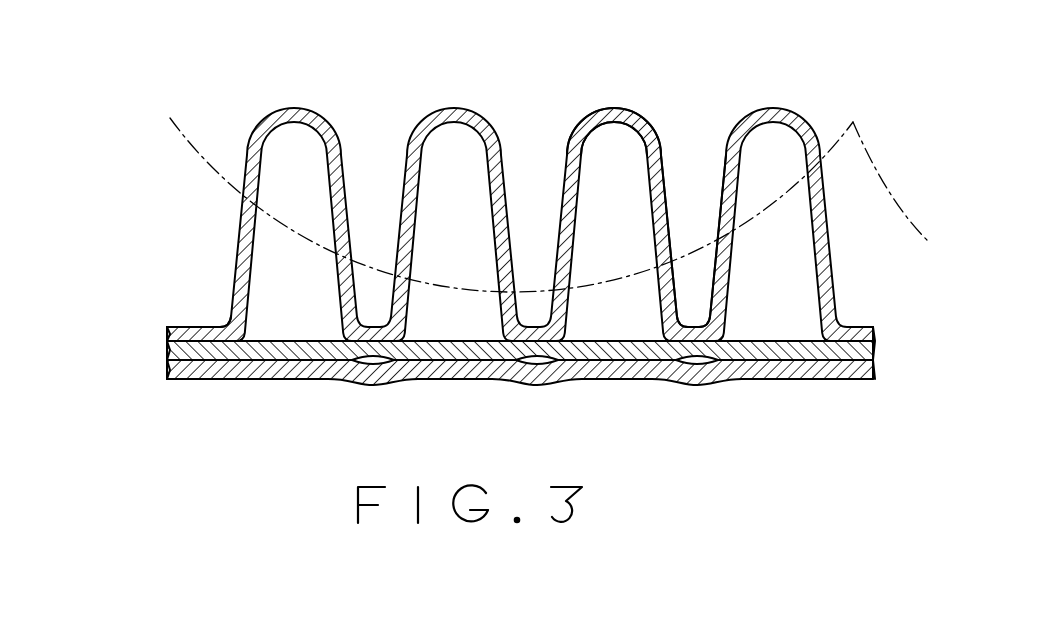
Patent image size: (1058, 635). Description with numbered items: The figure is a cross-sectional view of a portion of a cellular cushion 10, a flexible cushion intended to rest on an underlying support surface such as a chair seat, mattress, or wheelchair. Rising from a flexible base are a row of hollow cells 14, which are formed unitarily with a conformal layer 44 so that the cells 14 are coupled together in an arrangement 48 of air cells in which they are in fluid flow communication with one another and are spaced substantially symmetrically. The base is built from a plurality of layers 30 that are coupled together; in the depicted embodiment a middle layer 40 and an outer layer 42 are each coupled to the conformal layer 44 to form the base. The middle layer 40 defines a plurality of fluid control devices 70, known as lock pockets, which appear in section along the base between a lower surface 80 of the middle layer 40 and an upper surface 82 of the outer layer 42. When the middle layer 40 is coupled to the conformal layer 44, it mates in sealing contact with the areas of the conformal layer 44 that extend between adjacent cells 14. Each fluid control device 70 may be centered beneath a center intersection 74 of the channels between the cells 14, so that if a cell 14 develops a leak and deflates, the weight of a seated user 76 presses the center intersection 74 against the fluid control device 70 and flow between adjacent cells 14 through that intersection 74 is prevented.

The cellular cushion 10 is at (207, 228).
The hollow cells 14 is at (345, 139).
The layers 30 is at (883, 374).
The middle layer 40 is at (495, 358).
The outer layer 42 is at (242, 379).
The conformal layer 44 is at (193, 325).
The arrangement of air cells 48 is at (623, 95).
The fluid control devices 70 is at (373, 362).
The center intersection 74 is at (695, 270).
The seated user 76 is at (843, 133).
The lower surface 80 is at (288, 372).
The upper surface 82 is at (808, 350).